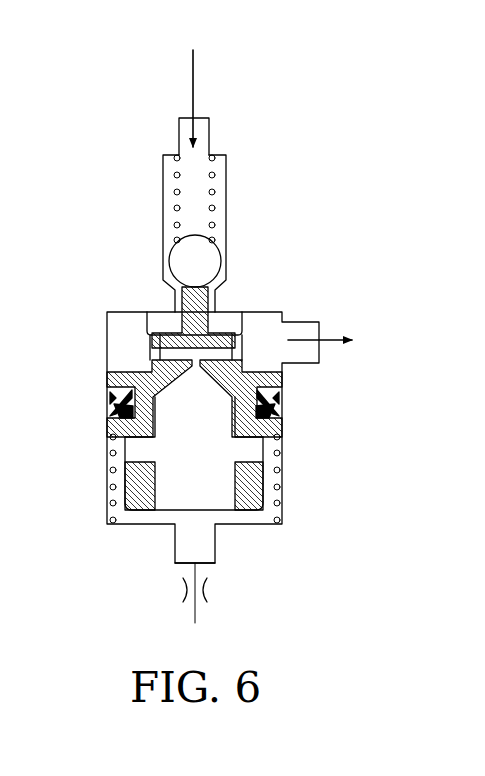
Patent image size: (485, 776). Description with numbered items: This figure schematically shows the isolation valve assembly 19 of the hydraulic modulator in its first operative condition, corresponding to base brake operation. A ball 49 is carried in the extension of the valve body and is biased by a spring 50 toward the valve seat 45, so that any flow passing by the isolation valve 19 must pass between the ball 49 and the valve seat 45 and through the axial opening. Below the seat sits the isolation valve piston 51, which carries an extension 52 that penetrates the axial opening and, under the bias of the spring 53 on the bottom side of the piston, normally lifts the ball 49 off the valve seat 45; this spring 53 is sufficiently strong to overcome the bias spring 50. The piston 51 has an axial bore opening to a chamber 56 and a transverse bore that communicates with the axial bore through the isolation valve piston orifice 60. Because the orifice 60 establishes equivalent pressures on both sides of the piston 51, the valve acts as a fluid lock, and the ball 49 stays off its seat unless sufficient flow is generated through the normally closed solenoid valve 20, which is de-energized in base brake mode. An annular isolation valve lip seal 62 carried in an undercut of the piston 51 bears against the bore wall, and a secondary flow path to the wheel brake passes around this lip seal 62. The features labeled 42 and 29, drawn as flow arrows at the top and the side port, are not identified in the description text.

The isolation valve assembly 19 is at (250, 298).
The solenoid valve 20 is at (188, 595).
The outlet port flow 29 is at (330, 342).
The inlet fluid flow 42 is at (193, 68).
The valve seat 45 is at (221, 281).
The ball 49 is at (203, 268).
The spring 50 is at (212, 174).
The isolation valve piston 51 is at (107, 382).
The extension 52 is at (192, 302).
The spring 53 is at (280, 487).
The chamber 56 is at (195, 570).
The isolation valve piston orifice 60 is at (118, 410).
The isolation valve lip seal 62 is at (277, 409).